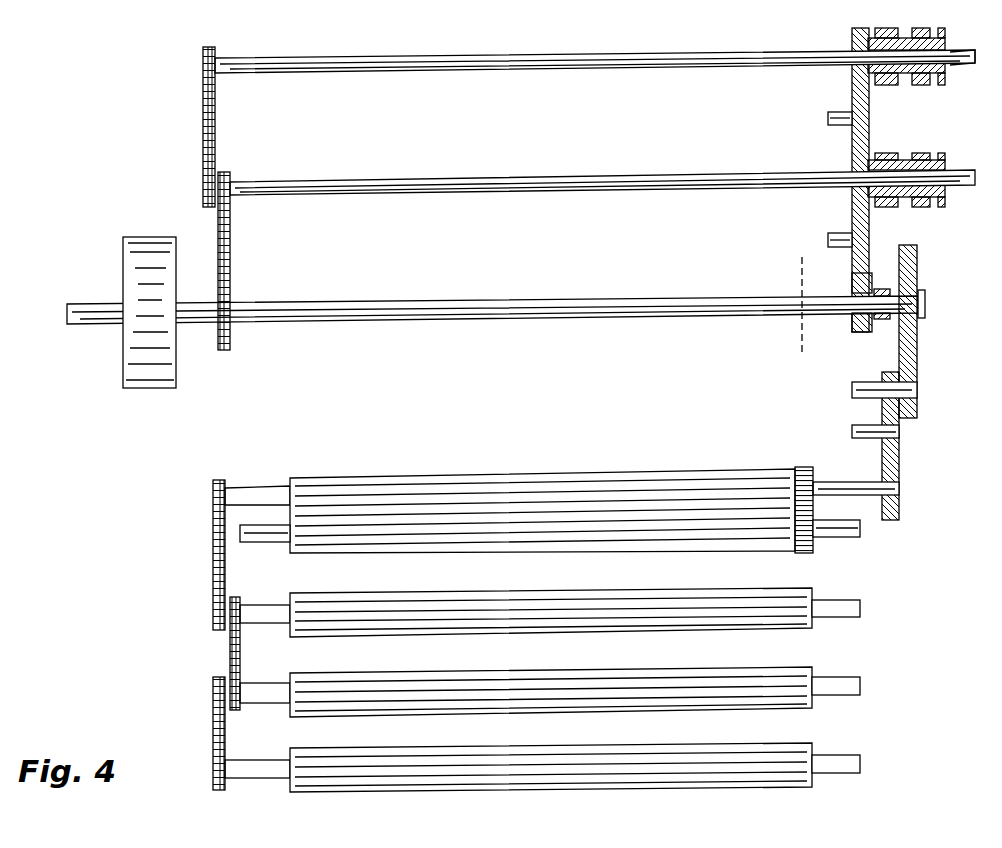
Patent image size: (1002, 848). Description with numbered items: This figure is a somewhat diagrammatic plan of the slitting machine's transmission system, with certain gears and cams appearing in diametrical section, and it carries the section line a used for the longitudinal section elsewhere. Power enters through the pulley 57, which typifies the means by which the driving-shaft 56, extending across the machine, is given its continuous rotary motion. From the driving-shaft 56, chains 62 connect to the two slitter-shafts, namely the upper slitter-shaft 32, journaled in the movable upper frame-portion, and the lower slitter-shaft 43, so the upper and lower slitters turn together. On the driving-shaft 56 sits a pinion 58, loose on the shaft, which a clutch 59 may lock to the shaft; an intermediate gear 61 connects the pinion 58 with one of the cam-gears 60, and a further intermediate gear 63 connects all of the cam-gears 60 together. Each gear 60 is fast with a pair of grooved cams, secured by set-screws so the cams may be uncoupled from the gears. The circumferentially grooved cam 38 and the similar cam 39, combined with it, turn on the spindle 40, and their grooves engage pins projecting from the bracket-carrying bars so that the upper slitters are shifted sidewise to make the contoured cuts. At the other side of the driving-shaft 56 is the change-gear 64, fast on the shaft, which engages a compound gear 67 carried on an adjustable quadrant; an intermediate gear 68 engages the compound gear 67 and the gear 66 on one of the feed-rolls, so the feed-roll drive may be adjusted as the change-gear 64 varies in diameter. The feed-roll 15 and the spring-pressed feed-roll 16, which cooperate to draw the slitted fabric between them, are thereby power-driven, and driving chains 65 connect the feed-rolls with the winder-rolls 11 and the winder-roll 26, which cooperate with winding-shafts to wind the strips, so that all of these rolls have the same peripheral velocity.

The winder-roll 11 is at (503, 608).
The feed-roll 15 is at (456, 486).
The spring-pressed feed-roll 16 is at (430, 540).
The winder-roll 26 is at (487, 760).
The upper slitter-shaft 32 is at (612, 58).
The circumferentially grooved cam 38 is at (892, 86).
The cam 39 is at (940, 30).
The spindle 40 is at (963, 66).
The lower slitter-shaft 43 is at (505, 182).
The driving-shaft 56 is at (432, 300).
The pulley 57 is at (143, 237).
The pinion 58 is at (858, 332).
The clutch 59 is at (880, 322).
The gear 60 is at (852, 46).
The intermediate gear 61 is at (852, 222).
The chains 62 is at (216, 125).
The intermediate gear 63 is at (852, 108).
The change-gear 64 is at (918, 340).
The driving chains 65 is at (212, 562).
The gear 66 is at (900, 496).
The compound gear 67 is at (917, 408).
The intermediate gear 68 is at (900, 447).
The line a is at (799, 295).